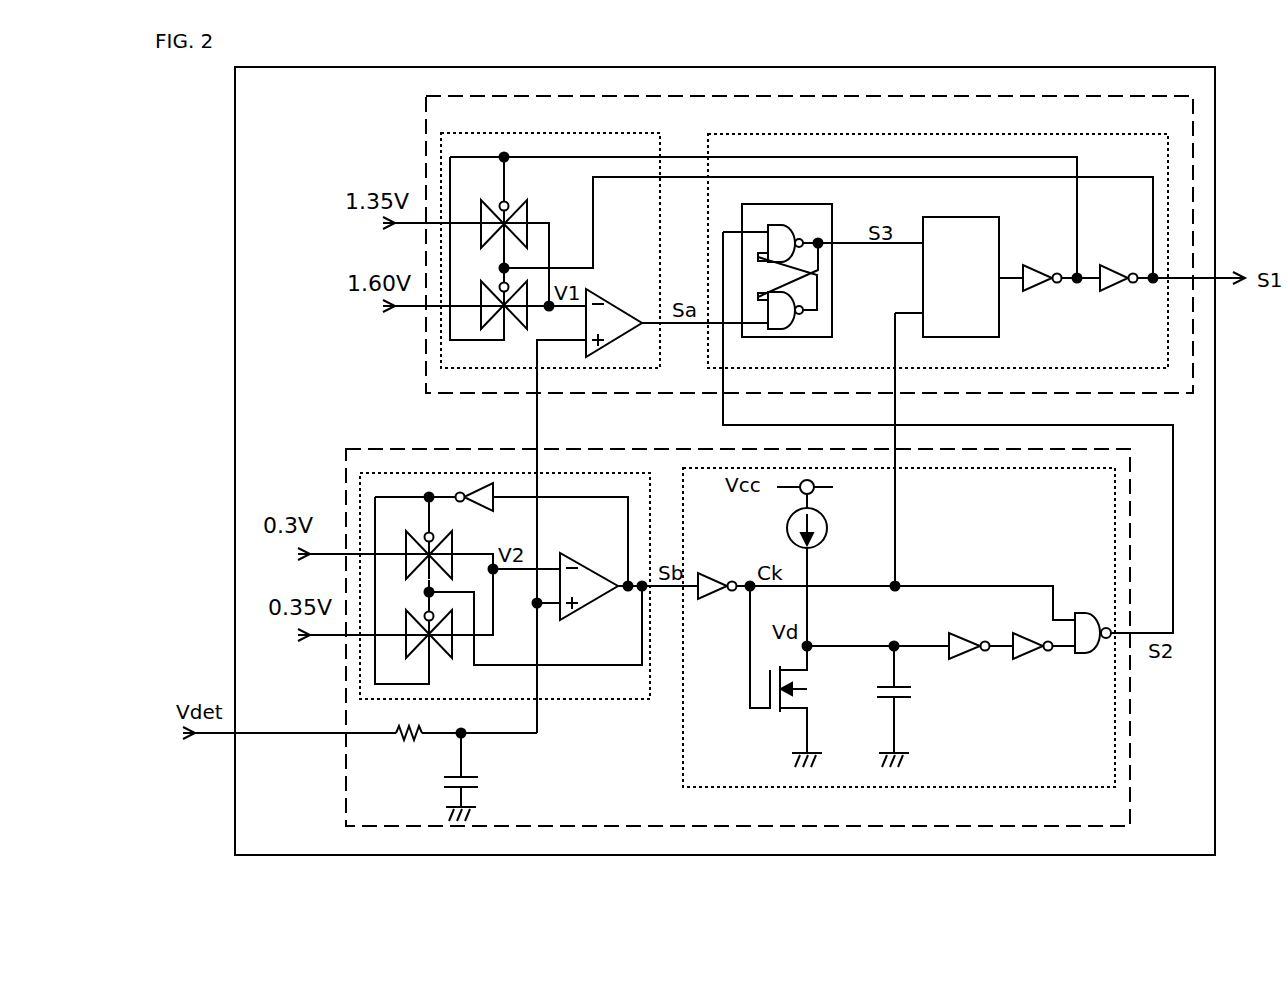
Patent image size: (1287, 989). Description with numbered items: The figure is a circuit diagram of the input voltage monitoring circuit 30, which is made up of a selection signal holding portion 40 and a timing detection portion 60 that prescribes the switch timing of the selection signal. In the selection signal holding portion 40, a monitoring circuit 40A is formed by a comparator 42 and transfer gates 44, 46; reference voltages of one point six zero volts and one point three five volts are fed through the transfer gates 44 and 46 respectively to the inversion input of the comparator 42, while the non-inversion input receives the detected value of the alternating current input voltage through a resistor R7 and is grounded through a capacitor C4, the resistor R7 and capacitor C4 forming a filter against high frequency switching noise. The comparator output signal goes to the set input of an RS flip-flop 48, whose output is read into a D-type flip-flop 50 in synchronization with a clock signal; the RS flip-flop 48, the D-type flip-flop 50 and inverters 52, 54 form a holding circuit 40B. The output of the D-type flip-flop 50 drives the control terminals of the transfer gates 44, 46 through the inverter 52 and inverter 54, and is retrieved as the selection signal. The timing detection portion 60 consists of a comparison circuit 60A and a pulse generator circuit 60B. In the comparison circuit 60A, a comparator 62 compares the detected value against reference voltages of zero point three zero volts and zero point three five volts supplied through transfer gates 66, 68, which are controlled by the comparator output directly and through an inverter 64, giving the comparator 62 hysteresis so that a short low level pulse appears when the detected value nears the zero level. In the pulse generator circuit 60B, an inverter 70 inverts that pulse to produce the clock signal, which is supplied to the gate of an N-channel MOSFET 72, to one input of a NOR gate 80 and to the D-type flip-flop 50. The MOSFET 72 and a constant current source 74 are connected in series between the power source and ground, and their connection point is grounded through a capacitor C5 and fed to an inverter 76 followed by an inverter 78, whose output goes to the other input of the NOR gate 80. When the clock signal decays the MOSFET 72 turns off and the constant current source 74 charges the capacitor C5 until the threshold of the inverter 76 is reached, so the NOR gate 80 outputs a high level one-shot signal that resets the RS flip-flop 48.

The input voltage monitoring circuit 30 is at (1216, 112).
The selection signal holding portion 40 is at (426, 157).
The monitoring circuit 40A is at (548, 133).
The holding circuit 40B is at (846, 134).
The comparator 42 is at (612, 296).
The transfer gate 44 is at (498, 283).
The transfer gate 46 is at (528, 206).
The RS flip-flop 48 is at (836, 215).
The D-type flip-flop 50 is at (999, 217).
The inverter 52 is at (1034, 290).
The inverter 54 is at (1110, 290).
The timing detection portion 60 is at (346, 450).
The comparison circuit 60A is at (595, 699).
The pulse generator circuit 60B is at (683, 782).
The comparator 62 is at (585, 556).
The inverter 64 is at (482, 510).
The transfer gate 66 is at (422, 528).
The transfer gate 68 is at (446, 658).
The inverter 70 is at (706, 572).
The N-channel type MOSFET 72 is at (770, 710).
The constant current source 74 is at (827, 528).
The inverter 76 is at (960, 660).
The inverter 78 is at (1026, 660).
The NOR gate 80 is at (1078, 612).
The resistor R7 is at (408, 748).
The capacitor C4 is at (470, 777).
The capacitor C5 is at (904, 706).